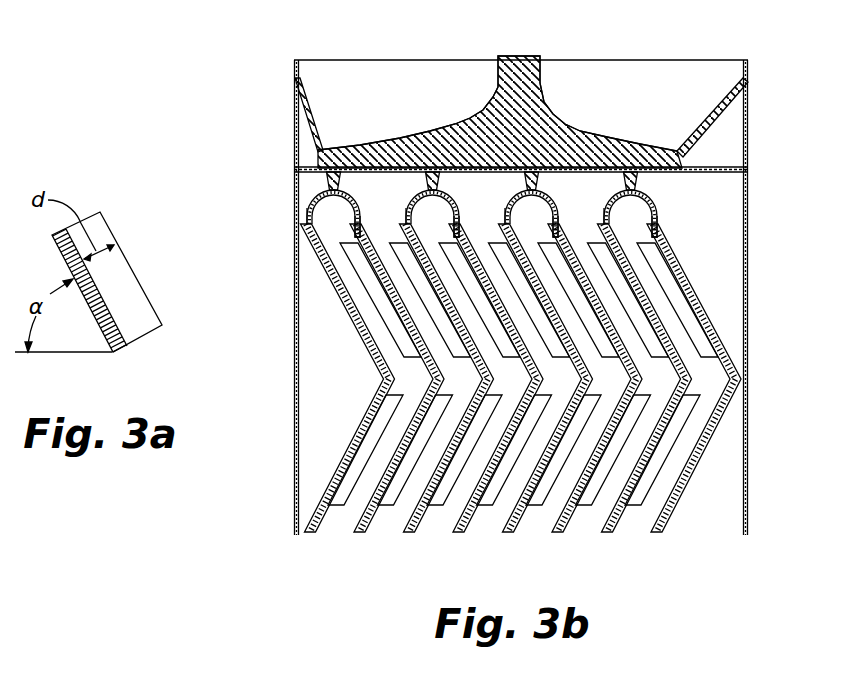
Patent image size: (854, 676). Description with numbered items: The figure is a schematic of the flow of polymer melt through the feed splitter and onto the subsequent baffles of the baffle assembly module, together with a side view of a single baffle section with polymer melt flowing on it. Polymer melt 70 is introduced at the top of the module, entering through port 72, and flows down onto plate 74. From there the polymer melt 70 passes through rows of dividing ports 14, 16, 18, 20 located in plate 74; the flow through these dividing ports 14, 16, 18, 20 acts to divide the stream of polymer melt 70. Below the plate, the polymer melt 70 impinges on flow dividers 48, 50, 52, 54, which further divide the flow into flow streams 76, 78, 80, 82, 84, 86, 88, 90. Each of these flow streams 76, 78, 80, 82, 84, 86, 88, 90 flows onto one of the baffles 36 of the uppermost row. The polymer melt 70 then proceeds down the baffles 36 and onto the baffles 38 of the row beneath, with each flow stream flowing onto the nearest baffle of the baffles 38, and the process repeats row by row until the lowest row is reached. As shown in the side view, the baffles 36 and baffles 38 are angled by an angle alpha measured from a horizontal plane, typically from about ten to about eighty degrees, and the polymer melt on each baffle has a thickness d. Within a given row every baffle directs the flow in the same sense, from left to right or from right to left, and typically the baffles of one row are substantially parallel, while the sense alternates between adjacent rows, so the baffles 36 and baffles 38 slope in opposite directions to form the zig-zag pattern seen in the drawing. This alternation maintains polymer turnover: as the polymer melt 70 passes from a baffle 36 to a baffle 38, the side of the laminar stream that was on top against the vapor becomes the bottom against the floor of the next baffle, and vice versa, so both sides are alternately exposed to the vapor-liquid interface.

The dividing port 14 is at (338, 150).
The dividing port 16 is at (437, 157).
The dividing port 18 is at (527, 168).
The dividing port 20 is at (632, 173).
The polymer melt 70 is at (495, 120).
The port 72 is at (540, 57).
The plate 74 is at (657, 148).
The flow divider 48 is at (318, 197).
The flow divider 50 is at (415, 195).
The flow divider 52 is at (550, 195).
The flow divider 54 is at (617, 196).
The flow stream 76 is at (305, 219).
The flow stream 78 is at (362, 222).
The flow stream 80 is at (411, 224).
The flow stream 82 is at (461, 222).
The flow stream 84 is at (510, 224).
The flow stream 86 is at (561, 222).
The flow stream 88 is at (610, 224).
The flow stream 90 is at (661, 222).
The baffle 36 is at (388, 300).
The baffle 38 is at (322, 520).